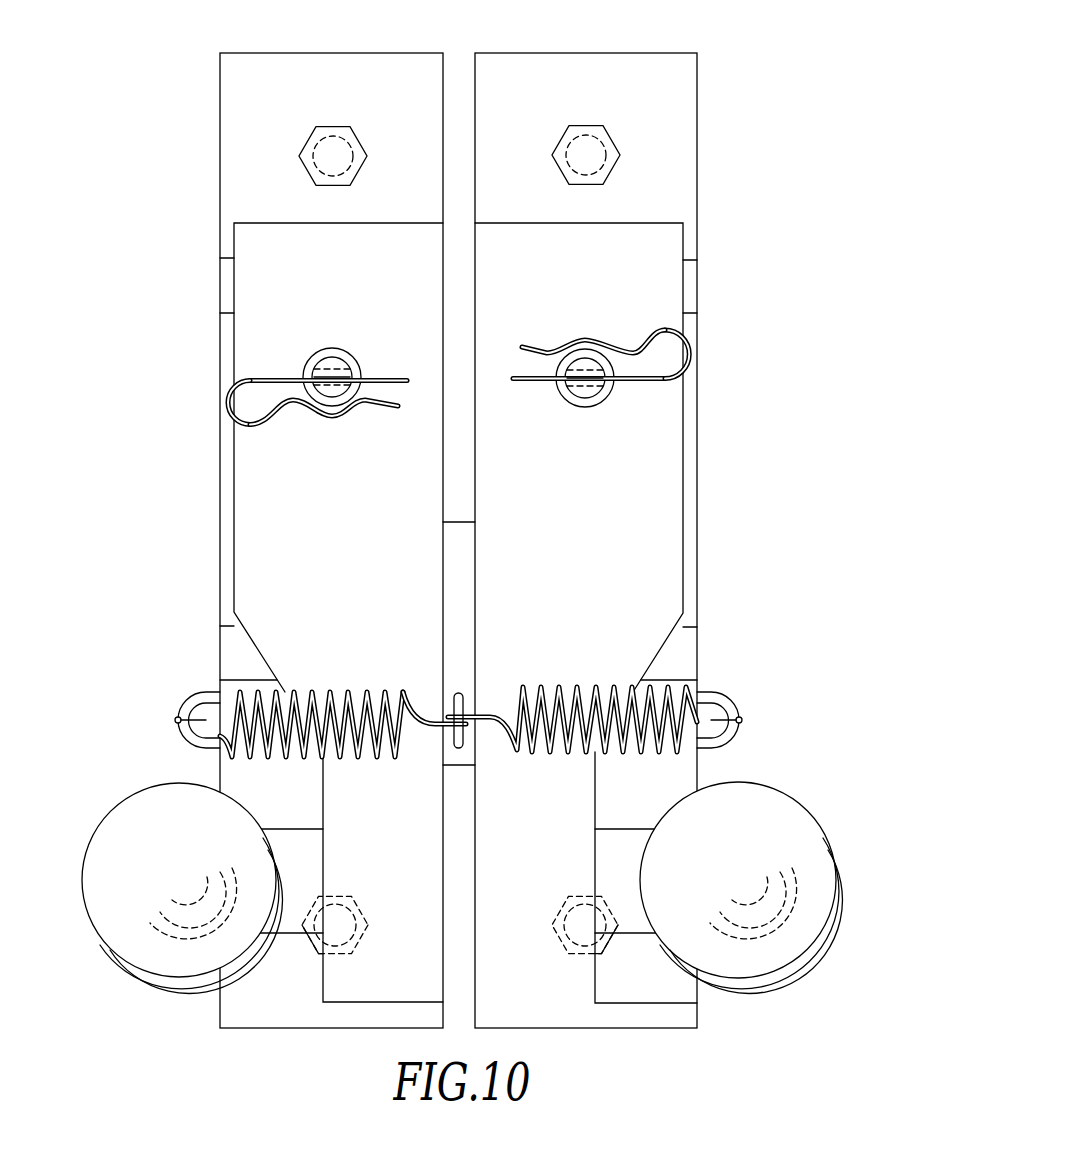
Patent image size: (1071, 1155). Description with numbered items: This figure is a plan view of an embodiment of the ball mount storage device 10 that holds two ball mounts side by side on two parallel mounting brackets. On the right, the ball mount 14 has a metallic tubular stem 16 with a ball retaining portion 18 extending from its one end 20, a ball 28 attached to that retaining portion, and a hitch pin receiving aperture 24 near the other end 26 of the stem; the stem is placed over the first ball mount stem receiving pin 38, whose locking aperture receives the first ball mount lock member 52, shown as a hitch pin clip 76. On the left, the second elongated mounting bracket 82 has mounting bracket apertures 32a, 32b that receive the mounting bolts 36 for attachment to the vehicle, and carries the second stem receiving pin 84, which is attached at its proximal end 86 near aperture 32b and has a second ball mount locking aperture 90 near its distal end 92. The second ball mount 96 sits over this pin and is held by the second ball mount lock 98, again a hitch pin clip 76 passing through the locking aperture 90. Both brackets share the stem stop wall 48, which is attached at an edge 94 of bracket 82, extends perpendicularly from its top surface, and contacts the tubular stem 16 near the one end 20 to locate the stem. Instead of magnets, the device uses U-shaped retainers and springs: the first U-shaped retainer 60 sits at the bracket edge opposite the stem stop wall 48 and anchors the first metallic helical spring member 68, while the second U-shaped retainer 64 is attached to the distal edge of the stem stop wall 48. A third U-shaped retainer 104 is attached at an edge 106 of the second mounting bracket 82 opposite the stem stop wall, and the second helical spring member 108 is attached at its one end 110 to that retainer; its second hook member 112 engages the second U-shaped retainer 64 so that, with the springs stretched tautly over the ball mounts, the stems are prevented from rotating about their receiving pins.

The ball mount storage device 10 is at (704, 77).
The ball mount 14 is at (670, 256).
The tubular stem 16 is at (245, 487).
The ball retaining portion 18 is at (340, 994).
The one end of the tubular stem 20 is at (245, 577).
The hitch pin receiving aperture 24 is at (328, 350).
The other end of the stem 26 is at (245, 268).
The ball 28 is at (107, 823).
The mounting bracket aperture 32a is at (350, 905).
The mounting bracket aperture 32b is at (322, 133).
The mounting bolt 36 is at (355, 138).
The first ball mount stem receiving pin 38 is at (598, 406).
The stem stop wall 48 is at (478, 521).
The first ball mount lock member 52 is at (649, 333).
The first U-shaped retainer 60 is at (735, 706).
The second U-shaped retainer 64 is at (459, 693).
The first metallic helical spring member 68 is at (547, 690).
The hitch pin clip 76 is at (248, 377).
The second elongated mounting bracket 82 is at (219, 87).
The second stem receiving pin 84 is at (348, 352).
The proximal end of the second stem receiving pin 86 is at (311, 356).
The second ball mount locking aperture 90 is at (334, 411).
The distal end of the second stem receiving pin 92 is at (357, 364).
The edge of the second mounting bracket 94 is at (455, 545).
The second ball mount 96 is at (250, 440).
The second ball mount lock 98 is at (228, 398).
The third U-shaped retainer 104 is at (200, 704).
The edge of the second mounting bracket 106 is at (218, 618).
The second helical spring member 108 is at (376, 690).
The one end of the second helical spring member 110 is at (186, 728).
The second hook member 112 is at (437, 742).